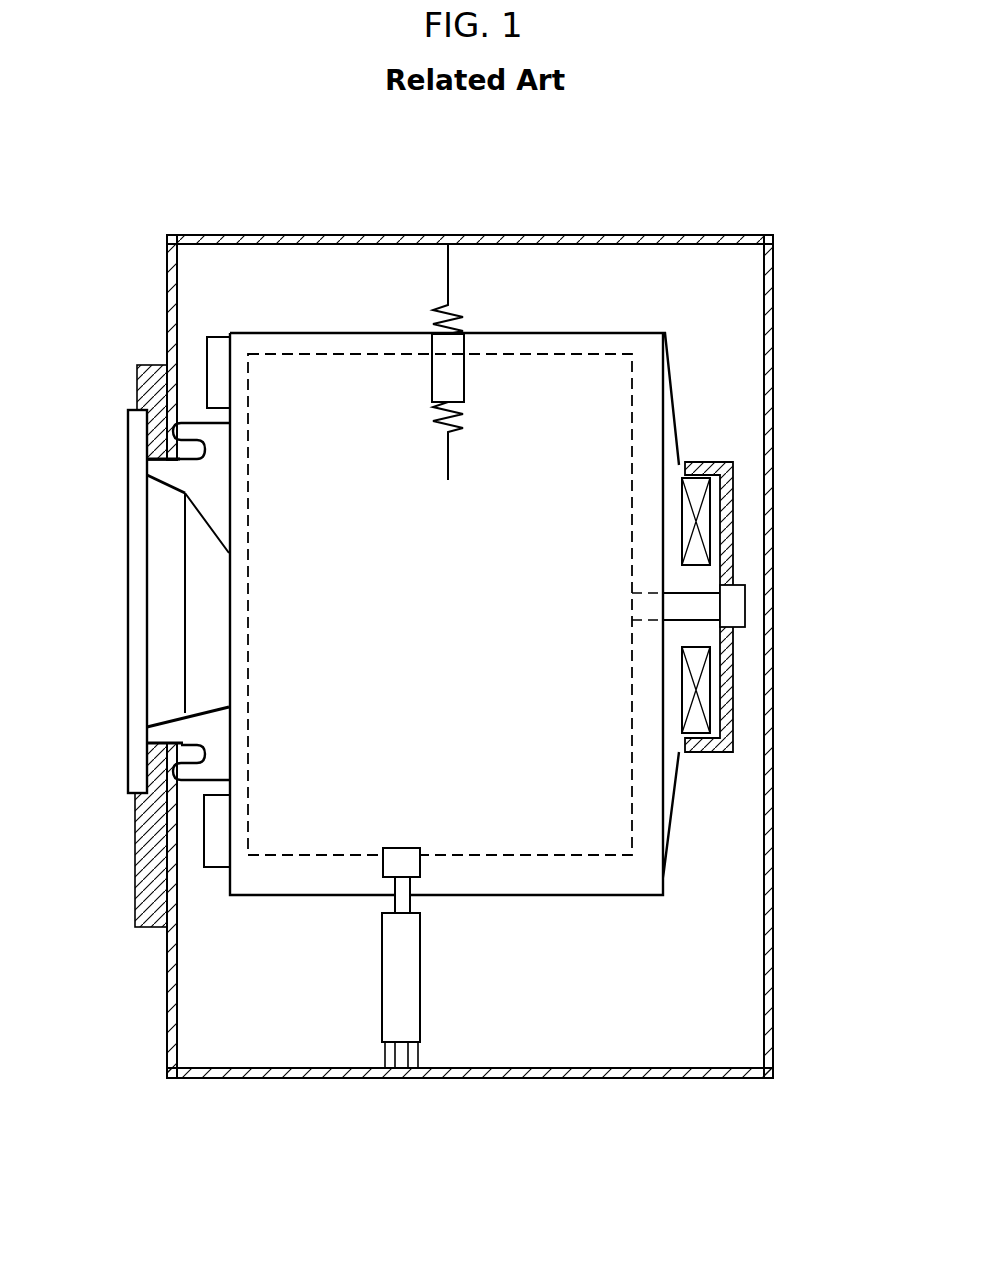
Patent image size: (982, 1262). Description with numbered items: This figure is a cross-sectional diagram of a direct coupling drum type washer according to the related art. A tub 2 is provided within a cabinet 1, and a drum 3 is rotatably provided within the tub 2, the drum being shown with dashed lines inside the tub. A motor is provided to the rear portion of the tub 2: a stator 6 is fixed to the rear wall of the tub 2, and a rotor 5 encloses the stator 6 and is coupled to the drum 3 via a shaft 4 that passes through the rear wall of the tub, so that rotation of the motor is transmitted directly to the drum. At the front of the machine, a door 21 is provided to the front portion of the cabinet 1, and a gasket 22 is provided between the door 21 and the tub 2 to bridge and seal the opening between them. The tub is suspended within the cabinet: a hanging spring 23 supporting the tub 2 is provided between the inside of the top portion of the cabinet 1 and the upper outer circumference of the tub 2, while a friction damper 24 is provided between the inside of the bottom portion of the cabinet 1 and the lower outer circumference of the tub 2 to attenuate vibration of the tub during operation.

The cabinet 1 is at (262, 235).
The tub 2 is at (581, 333).
The drum 3 is at (348, 354).
The shaft 4 is at (700, 603).
The rotor 5 is at (730, 697).
The stator 6 is at (702, 522).
The door 21 is at (133, 615).
The gasket 22 is at (197, 782).
The hanging spring 23 is at (457, 312).
The friction damper 24 is at (405, 985).